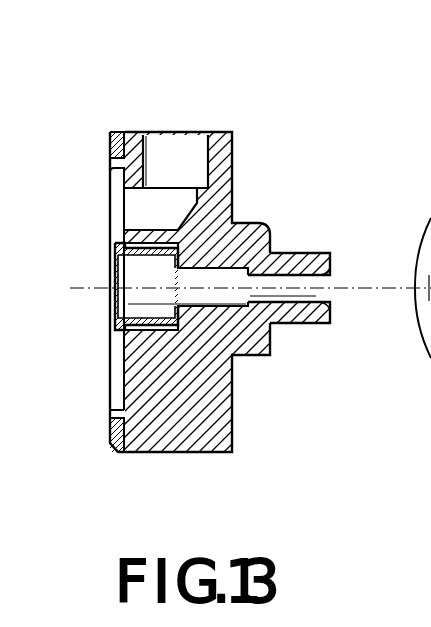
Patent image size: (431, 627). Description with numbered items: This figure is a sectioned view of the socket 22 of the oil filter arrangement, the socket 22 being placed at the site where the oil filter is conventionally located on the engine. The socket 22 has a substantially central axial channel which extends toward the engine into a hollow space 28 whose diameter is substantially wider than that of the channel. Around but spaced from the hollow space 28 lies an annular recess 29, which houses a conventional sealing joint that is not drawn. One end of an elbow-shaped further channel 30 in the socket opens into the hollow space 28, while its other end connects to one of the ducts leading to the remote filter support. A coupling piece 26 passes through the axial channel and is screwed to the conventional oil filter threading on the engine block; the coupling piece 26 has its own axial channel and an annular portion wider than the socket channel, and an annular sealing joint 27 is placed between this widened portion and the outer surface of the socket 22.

The socket 22 is at (242, 403).
The coupling piece 26 is at (275, 240).
The annular sealing joint 27 is at (232, 240).
The hollow space 28 is at (118, 380).
The annular recess 29 is at (108, 135).
The elbow-shaped further channel 30 is at (180, 157).